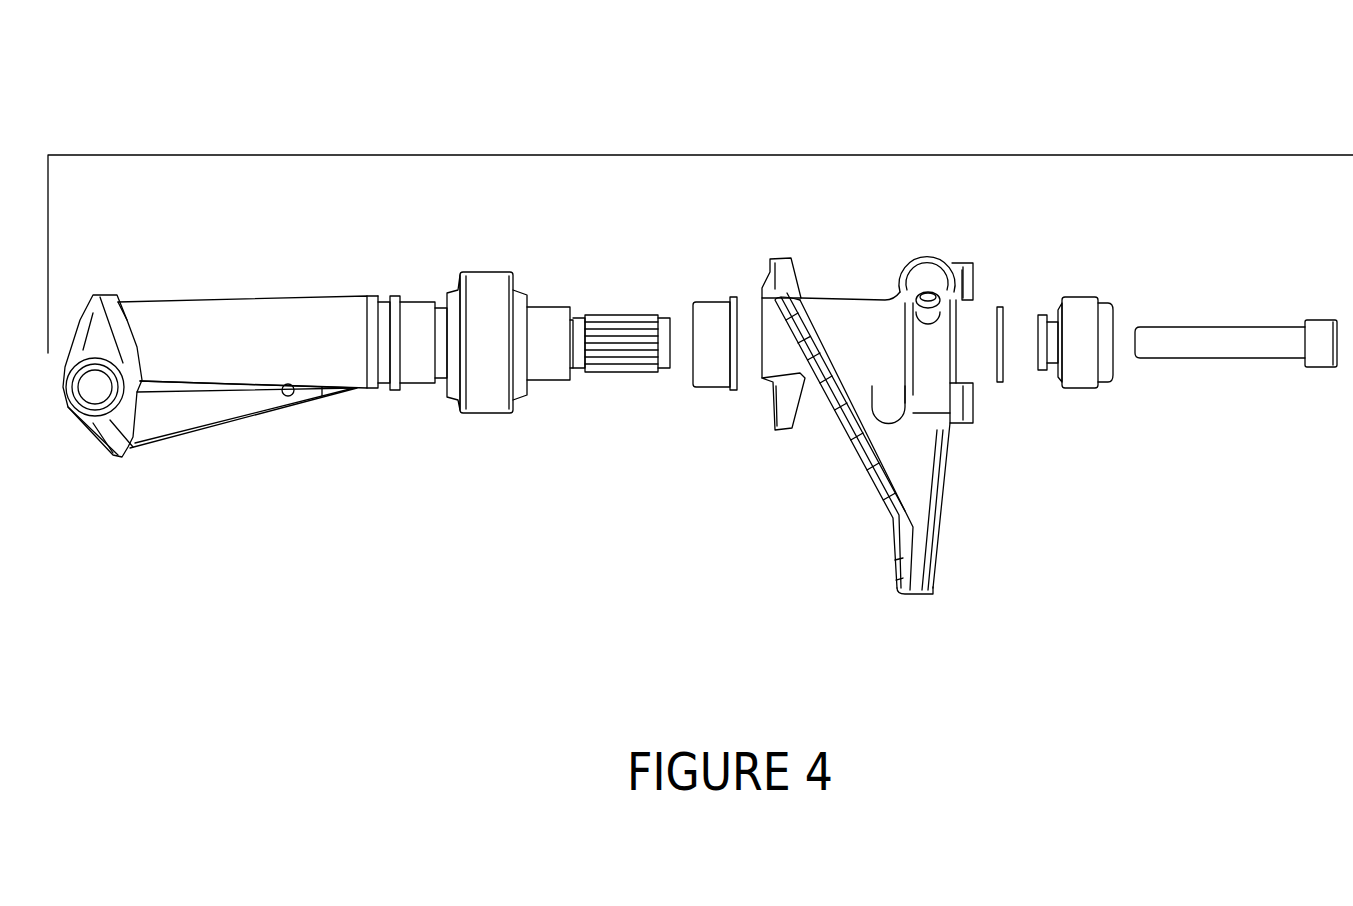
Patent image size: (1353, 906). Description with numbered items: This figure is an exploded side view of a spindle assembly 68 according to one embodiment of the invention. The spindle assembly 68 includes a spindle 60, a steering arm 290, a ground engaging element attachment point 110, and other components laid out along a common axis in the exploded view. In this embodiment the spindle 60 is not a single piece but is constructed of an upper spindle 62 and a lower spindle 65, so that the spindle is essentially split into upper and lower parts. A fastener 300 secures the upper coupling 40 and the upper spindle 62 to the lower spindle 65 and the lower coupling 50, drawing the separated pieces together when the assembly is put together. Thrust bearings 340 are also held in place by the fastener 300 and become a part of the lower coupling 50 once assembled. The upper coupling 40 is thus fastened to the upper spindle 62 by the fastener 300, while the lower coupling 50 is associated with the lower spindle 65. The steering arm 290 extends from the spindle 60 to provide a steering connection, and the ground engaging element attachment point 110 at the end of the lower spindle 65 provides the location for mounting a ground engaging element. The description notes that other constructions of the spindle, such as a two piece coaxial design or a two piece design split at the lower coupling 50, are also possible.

The spindle assembly 68 is at (717, 155).
The spindle 60 is at (258, 330).
The lower spindle 65 is at (330, 350).
The ground engaging element attachment point 110 is at (95, 387).
The lower coupling 50 is at (520, 277).
The thrust bearings 340 is at (710, 363).
The upper spindle 62 is at (883, 363).
The steering arm 290 is at (918, 567).
The upper coupling 40 is at (1107, 296).
The fastener 300 is at (1178, 343).